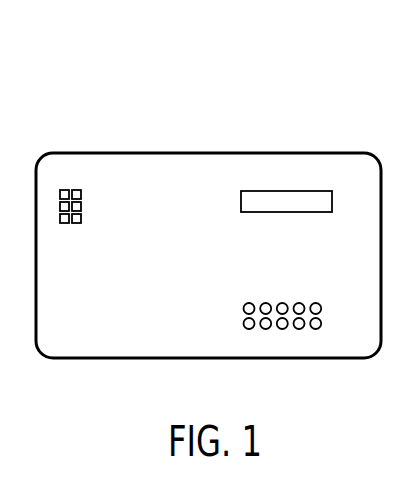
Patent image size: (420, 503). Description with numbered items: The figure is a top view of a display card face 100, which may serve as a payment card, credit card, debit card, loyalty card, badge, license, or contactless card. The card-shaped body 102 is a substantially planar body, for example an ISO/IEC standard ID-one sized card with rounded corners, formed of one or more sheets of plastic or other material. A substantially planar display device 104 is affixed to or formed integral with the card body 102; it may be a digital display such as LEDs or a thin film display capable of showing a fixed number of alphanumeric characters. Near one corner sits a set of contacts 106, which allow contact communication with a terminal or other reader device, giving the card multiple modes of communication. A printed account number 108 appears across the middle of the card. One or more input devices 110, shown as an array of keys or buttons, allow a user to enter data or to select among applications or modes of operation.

The display card face 100 is at (294, 81).
The card-shaped body 102 is at (170, 157).
The display device 104 is at (332, 200).
The set of contacts 106 is at (82, 209).
The account number 108 is at (110, 255).
The input devices 110 is at (322, 320).